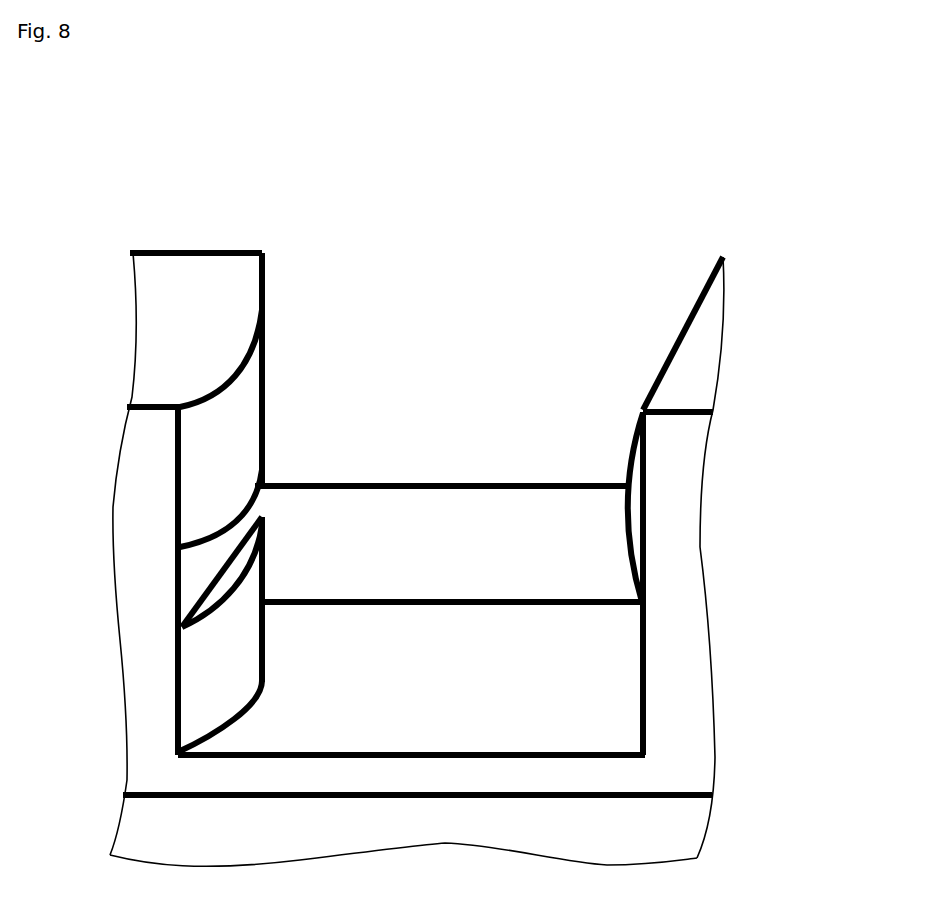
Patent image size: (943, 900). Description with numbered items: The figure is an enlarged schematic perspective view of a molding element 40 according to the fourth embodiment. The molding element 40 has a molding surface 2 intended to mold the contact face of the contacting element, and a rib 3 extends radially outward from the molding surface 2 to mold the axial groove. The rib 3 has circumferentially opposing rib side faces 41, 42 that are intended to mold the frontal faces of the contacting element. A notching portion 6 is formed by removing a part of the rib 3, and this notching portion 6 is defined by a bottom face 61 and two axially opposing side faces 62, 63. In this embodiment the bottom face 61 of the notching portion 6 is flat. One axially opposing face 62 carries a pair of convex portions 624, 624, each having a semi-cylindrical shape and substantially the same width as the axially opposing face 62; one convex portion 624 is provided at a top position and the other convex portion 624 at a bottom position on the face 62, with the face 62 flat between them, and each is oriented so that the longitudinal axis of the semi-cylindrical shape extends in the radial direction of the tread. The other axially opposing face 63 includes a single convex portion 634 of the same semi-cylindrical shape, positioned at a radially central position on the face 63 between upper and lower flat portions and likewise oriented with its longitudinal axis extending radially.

The molding element 40 is at (310, 230).
The rib side face 42 is at (170, 250).
The rib side face 41 is at (147, 590).
The notching portion 6 is at (455, 343).
The axially opposing side face 63 is at (640, 415).
The convex portion 634 is at (627, 537).
The axially opposing side face 62 is at (243, 515).
The convex portion 624 is at (207, 457).
The molding surface 2 is at (240, 855).
The bottom face 61 is at (532, 703).
The rib 3 is at (707, 383).